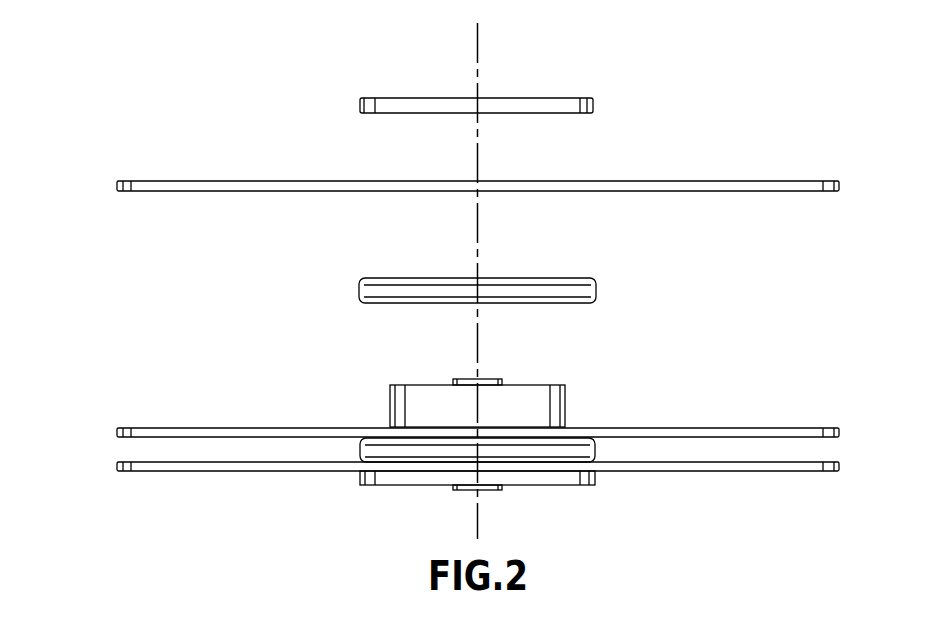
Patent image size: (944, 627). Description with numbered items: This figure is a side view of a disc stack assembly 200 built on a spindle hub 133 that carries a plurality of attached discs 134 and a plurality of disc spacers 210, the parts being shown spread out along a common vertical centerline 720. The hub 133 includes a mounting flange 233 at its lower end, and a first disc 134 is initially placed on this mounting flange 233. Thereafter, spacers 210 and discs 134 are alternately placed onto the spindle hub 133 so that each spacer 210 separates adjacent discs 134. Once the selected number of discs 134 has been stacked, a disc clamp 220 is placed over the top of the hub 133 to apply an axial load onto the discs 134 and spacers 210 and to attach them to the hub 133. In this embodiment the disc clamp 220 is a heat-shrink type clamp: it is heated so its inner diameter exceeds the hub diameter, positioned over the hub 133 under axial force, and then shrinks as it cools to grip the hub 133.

The disc stack assembly 200 is at (739, 106).
The central axis 720 is at (478, 61).
The disc clamp 220 is at (390, 99).
The disc 134 is at (117, 184).
The disc spacer 210 is at (359, 295).
The spindle hub 133 is at (390, 402).
The mounting flange 233 is at (595, 478).